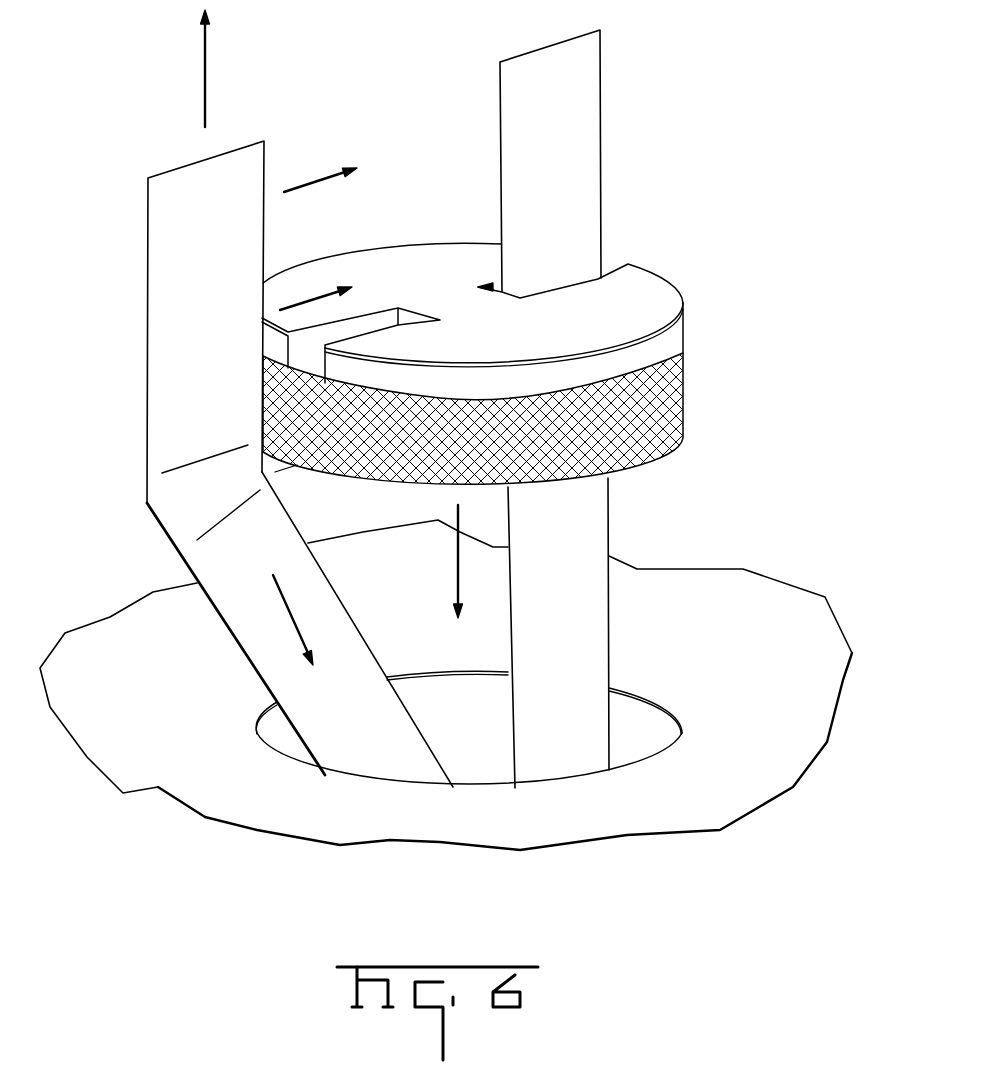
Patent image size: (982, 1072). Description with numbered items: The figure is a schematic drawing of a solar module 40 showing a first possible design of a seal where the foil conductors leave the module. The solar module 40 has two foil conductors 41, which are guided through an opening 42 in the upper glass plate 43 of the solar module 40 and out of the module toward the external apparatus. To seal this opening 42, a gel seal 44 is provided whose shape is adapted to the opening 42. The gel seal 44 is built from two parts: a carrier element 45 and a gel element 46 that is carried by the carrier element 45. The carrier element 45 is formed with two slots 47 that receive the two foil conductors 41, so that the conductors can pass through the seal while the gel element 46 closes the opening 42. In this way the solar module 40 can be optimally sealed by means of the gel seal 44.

The solar module 40 is at (690, 783).
The foil conductors 41 is at (360, 671).
The opening 42 is at (278, 733).
The upper glass plate 43 is at (568, 822).
The gel seal 44 is at (547, 319).
The carrier element 45 is at (600, 326).
The gel element 46 is at (684, 436).
The slots 47 is at (615, 272).